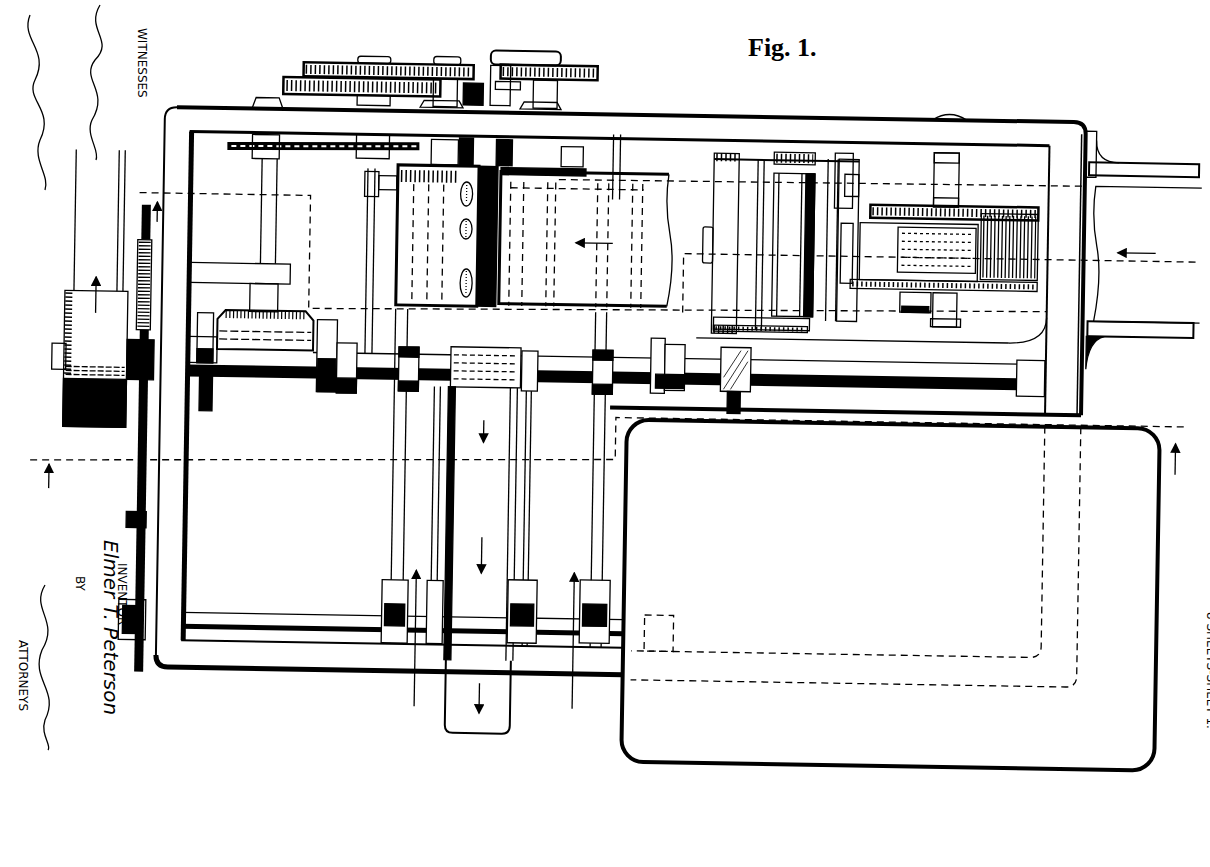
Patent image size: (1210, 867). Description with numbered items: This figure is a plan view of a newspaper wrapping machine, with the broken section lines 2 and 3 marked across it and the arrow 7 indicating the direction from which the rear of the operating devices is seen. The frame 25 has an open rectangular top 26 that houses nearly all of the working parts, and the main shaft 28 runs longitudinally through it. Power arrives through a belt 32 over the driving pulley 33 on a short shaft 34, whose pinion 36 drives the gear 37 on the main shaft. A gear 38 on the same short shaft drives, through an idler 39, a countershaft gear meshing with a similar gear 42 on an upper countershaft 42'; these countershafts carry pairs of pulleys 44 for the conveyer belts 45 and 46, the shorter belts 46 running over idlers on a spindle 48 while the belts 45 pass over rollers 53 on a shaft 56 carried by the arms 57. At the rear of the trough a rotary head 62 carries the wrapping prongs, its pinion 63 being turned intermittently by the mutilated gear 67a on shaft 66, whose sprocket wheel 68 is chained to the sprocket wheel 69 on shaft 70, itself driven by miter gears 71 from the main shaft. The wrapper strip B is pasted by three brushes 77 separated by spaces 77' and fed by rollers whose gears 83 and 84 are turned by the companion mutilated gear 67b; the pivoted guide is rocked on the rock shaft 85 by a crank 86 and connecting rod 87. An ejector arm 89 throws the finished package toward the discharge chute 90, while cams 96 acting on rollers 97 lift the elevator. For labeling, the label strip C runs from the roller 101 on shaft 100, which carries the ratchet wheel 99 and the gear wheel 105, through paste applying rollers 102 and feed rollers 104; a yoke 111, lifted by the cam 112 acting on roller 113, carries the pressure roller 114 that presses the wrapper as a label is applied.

The section line 2— 2 is at (602, 450).
The section line 3— 3 is at (664, 246).
The arrow 7 is at (449, 4).
The frame 25 is at (677, 437).
The open rectangular top 26 is at (168, 566).
The main shaft 28 is at (898, 362).
The belt 32 is at (80, 247).
The driving pulley 33 is at (66, 320).
The short shaft 34 is at (56, 360).
The pinion 36 is at (207, 315).
The gear 37 is at (209, 406).
The gear 38 is at (134, 434).
The idler 39 is at (137, 530).
The gear 42 is at (160, 608).
The countershaft 42' is at (402, 614).
The pulleys 44 is at (392, 597).
The conveyer belts 45 is at (399, 320).
The conveyer belts 46 is at (398, 430).
The spindle 48 is at (515, 376).
The rollers 53 is at (619, 124).
The shaft 56 is at (378, 186).
The arms 57 is at (369, 234).
The rotary head 62 is at (526, 138).
The pinion 63 is at (557, 86).
The shaft 66 is at (362, 158).
The mutilated gear 67a is at (296, 75).
The mutilated gear 67b is at (322, 60).
The sprocket wheel 68 is at (333, 150).
The sprocket wheel 69 is at (243, 153).
The shaft 70 is at (264, 222).
The miter gears 71 is at (318, 338).
The brush 77 is at (430, 221).
The spaces 77' is at (582, 223).
The gear 83 is at (410, 60).
The gear 84 is at (588, 70).
The rock shaft 85 is at (483, 101).
The crank 86 is at (458, 92).
The connecting rod 87 is at (523, 47).
The ejector arm 89 is at (566, 147).
The discharge chute 90 is at (466, 722).
The cams 96 is at (330, 316).
The roller 97 is at (330, 390).
The ratchet wheel 99 is at (910, 299).
The shaft 100 is at (955, 160).
The roller 101 is at (983, 298).
The paste applying rollers 102 is at (915, 251).
The feed rollers 104 is at (868, 186).
The wheel 105 is at (897, 186).
The yoke 111 is at (727, 198).
The cam 112 is at (740, 402).
The roller 113 is at (750, 352).
The pressure roller 114 is at (782, 162).
The strip of paper B is at (660, 186).
The label strip C is at (1003, 203).